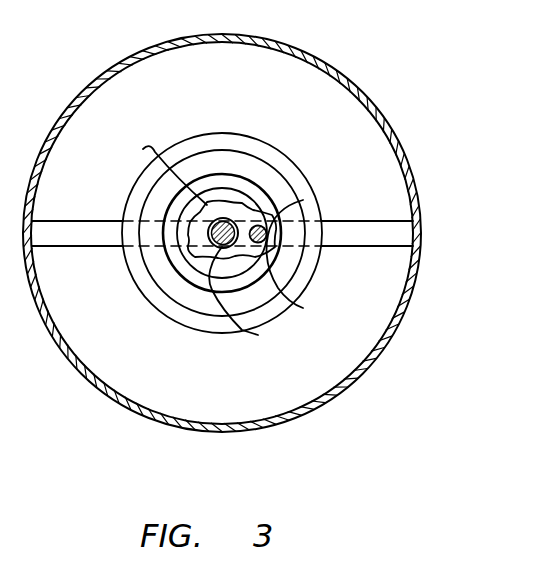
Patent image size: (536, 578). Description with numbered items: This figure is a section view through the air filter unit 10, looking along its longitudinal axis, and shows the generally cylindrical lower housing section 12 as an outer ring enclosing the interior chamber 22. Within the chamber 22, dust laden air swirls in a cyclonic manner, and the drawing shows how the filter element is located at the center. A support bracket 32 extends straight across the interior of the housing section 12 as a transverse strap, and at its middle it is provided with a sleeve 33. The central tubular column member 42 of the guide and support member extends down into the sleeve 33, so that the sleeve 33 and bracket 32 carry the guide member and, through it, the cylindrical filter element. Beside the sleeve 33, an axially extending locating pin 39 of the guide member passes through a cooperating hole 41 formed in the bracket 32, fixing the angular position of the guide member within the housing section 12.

The air filter unit 10 is at (420, 156).
The lower housing section 12 is at (316, 58).
The interior chamber 22 is at (320, 142).
The support bracket 32 is at (330, 237).
The sleeve 33 is at (162, 172).
The locating pin 39 is at (298, 260).
The hole 41 is at (303, 200).
The central tubular column member 42 is at (247, 297).